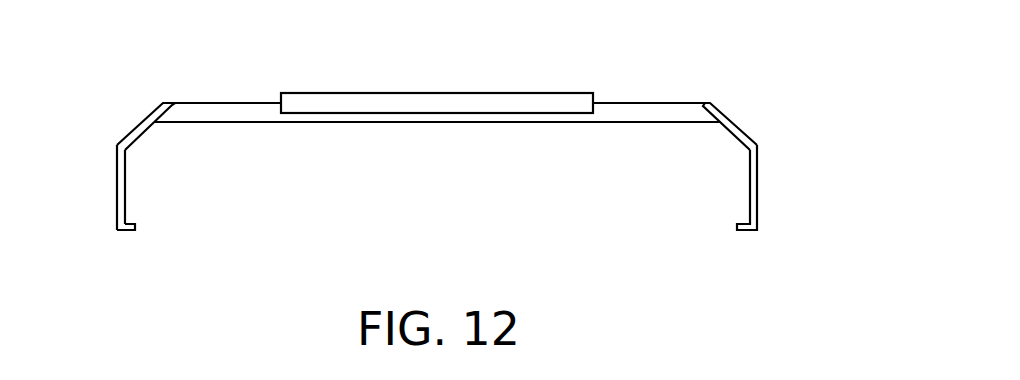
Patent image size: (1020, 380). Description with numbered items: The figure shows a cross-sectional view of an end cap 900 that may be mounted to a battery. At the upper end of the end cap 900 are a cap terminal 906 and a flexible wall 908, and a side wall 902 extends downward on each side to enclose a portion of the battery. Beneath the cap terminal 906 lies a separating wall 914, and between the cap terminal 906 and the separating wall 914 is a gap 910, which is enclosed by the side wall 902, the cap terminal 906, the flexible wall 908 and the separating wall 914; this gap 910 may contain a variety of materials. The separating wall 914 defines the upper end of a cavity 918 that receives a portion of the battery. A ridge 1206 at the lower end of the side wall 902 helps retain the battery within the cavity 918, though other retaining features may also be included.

The end cap 900 is at (473, 130).
The side wall 902 is at (757, 198).
The cap terminal 906 is at (387, 93).
The flexible wall 908 is at (658, 103).
The gap 910 is at (196, 95).
The separating wall 914 is at (495, 122).
The cavity 918 is at (414, 202).
The ridge 1206 is at (135, 226).